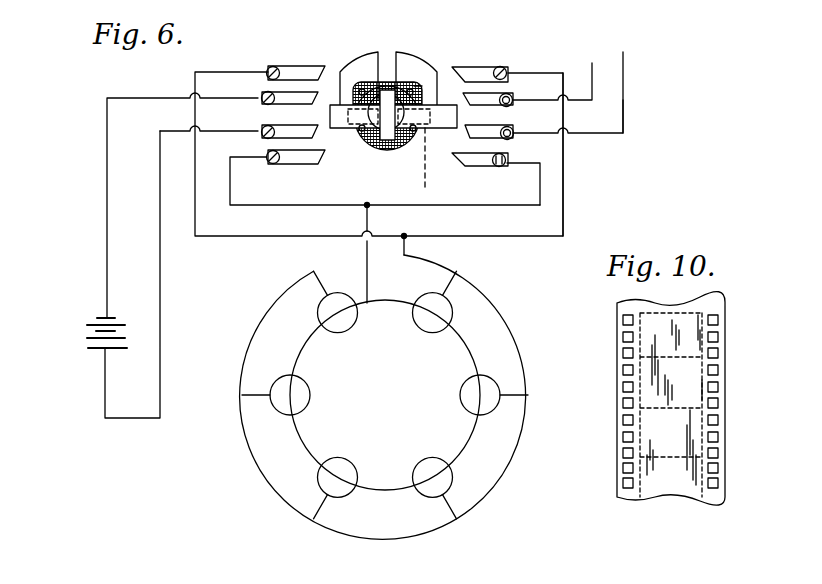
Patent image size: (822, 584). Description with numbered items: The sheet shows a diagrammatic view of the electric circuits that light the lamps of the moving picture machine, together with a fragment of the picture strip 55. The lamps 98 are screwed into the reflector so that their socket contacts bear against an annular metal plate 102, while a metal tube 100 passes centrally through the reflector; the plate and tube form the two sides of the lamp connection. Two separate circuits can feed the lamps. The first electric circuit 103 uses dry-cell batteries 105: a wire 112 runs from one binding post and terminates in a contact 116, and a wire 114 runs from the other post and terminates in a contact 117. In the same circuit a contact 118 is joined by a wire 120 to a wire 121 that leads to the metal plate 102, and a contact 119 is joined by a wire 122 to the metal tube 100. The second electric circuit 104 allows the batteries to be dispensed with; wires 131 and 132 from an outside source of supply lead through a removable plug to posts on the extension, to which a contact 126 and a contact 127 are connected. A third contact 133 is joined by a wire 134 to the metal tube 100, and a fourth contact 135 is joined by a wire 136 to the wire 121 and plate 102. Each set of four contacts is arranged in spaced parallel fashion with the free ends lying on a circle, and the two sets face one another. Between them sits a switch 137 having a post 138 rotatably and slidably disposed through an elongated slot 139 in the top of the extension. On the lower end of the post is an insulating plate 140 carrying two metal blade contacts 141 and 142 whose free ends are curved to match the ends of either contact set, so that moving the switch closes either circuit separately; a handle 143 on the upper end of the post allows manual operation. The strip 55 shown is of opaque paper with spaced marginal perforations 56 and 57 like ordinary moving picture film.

In FIG. 10, the strip 55 is at (688, 332).
In FIG. 10, the marginal perforations 56 is at (623, 420).
In FIG. 10, the marginal perforations 57 is at (737, 403).
In FIG. 6, the electric lamps 98 is at (303, 379).
In FIG. 6, the metal tube 100 is at (507, 322).
In FIG. 6, the annular metal plate 102 is at (307, 443).
In FIG. 6, the electric circuit 103 is at (107, 167).
In FIG. 6, the electric circuit 104 is at (625, 118).
In FIG. 6, the dry-cell batteries 105 is at (98, 341).
In FIG. 6, the wire 112 is at (105, 238).
In FIG. 6, the wire 114 is at (158, 258).
In FIG. 6, the contact 116 is at (283, 101).
In FIG. 6, the contact 117 is at (257, 134).
In FIG. 6, the contact 118 is at (287, 159).
In FIG. 6, the contact 119 is at (293, 70).
In FIG. 6, the wire 120 is at (280, 207).
In FIG. 6, the wire 121 is at (368, 280).
In FIG. 6, the wire 122 is at (195, 75).
In FIG. 6, the contact 126 is at (478, 100).
In FIG. 6, the contact 127 is at (493, 133).
In FIG. 6, the wire 131 is at (592, 63).
In FIG. 6, the wire 132 is at (623, 60).
In FIG. 6, the third contact 133 is at (473, 67).
In FIG. 6, the wire 134 is at (566, 178).
In FIG. 6, the fourth contact 135 is at (468, 163).
In FIG. 6, the wire 136 is at (490, 205).
In FIG. 6, the switch 137 is at (407, 148).
In FIG. 6, the post 138 is at (372, 150).
In FIG. 6, the elongated slot 139 is at (419, 166).
In FIG. 6, the insulating plate 140 is at (380, 153).
In FIG. 6, the contact 141 is at (358, 68).
In FIG. 6, the contact 142 is at (410, 67).
In FIG. 6, the handle 143 is at (415, 93).